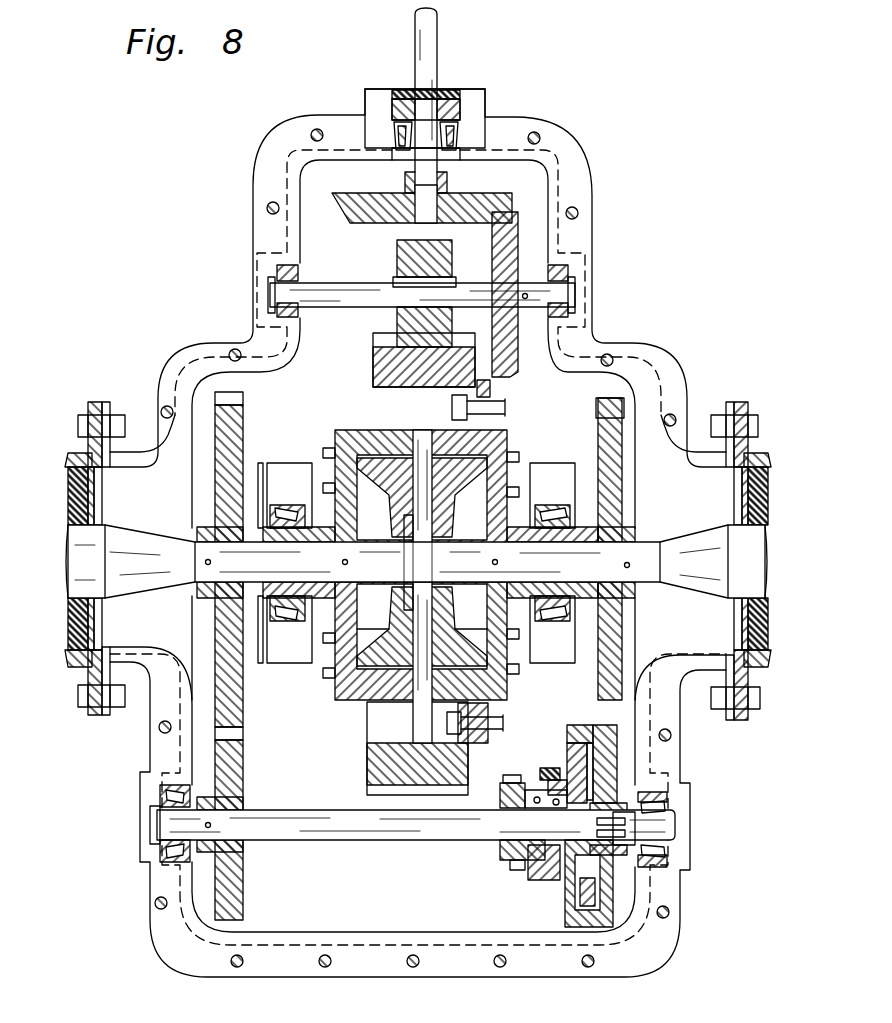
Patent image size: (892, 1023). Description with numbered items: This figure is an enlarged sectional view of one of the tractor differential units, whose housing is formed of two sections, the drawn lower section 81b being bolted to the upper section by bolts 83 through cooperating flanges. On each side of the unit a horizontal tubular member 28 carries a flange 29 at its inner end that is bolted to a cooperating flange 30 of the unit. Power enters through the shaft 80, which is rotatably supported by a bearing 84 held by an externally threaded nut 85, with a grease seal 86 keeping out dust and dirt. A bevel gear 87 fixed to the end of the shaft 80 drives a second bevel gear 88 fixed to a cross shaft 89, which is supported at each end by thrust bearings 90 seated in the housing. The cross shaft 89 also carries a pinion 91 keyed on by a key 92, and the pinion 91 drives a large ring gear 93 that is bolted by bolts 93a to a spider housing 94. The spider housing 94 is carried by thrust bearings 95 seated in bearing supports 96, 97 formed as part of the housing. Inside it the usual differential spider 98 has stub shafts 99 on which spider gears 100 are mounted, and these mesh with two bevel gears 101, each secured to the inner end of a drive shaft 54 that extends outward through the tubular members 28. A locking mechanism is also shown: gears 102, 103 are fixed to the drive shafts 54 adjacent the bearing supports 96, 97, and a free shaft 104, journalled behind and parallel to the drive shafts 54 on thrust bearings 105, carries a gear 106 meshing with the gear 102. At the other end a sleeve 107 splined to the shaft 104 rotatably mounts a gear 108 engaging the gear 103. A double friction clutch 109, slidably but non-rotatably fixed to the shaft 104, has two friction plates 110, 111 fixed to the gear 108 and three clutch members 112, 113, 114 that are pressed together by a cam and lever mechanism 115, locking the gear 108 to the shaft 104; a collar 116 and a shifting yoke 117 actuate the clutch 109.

The horizontal tubular member 28 is at (77, 457).
The flange 29 is at (92, 402).
The cooperating flange 30 is at (108, 412).
The drive shaft 54 is at (80, 568).
The shaft 80 is at (433, 44).
The lower section 81b is at (294, 926).
The bolts 83 is at (268, 204).
The bearing 84 is at (455, 132).
The externally threaded nut 85 is at (455, 110).
The grease seal 86 is at (443, 88).
The bevel gear 87 is at (350, 217).
The second bevel gear 88 is at (498, 240).
The cross shaft 89 is at (330, 293).
The thrust bearings 90 is at (277, 272).
The pinion 91 is at (398, 258).
The key 92 is at (393, 280).
The ring gear 93 is at (373, 378).
The bolts 93a is at (495, 403).
The spider housing 94 is at (337, 443).
The thrust bearings 95 is at (304, 513).
The bearing support 96 is at (290, 480).
The bearing support 97 is at (548, 480).
The differential spider 98 is at (402, 543).
The stub shafts 99 is at (423, 432).
The spider gears 100 is at (383, 458).
The bevel gears 101 is at (360, 637).
The gear 102 is at (244, 710).
The gear 103 is at (607, 648).
The free shaft 104 is at (318, 823).
The thrust bearings 105 is at (162, 852).
The gear 106 is at (233, 779).
The sleeve 107 is at (622, 855).
The gear 108 is at (612, 758).
The clutch 109 is at (555, 777).
The friction plate 110 is at (572, 748).
The friction plate 111 is at (589, 743).
The clutch member 112 is at (560, 880).
The clutch member 113 is at (568, 897).
The clutch member 114 is at (568, 910).
The cam and lever mechanism 115 is at (545, 795).
The collar 116 is at (500, 802).
The shifting yoke 117 is at (500, 860).